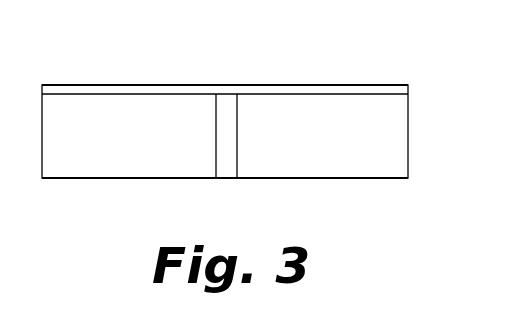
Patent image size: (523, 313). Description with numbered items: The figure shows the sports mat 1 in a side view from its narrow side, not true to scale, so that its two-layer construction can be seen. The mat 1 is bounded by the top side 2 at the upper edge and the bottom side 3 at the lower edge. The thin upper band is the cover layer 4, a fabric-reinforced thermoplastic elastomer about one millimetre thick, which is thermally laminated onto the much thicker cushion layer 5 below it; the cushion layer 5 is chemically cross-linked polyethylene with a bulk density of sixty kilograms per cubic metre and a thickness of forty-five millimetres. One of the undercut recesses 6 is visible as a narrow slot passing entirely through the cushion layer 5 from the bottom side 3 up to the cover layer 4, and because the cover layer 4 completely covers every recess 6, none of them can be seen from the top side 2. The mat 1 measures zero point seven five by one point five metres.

The mat 1 is at (379, 142).
The top side 2 is at (292, 85).
The bottom side 3 is at (354, 185).
The cover layer 4 is at (387, 91).
The cushion layer 5 is at (333, 163).
The undercut recesses 6 is at (227, 173).